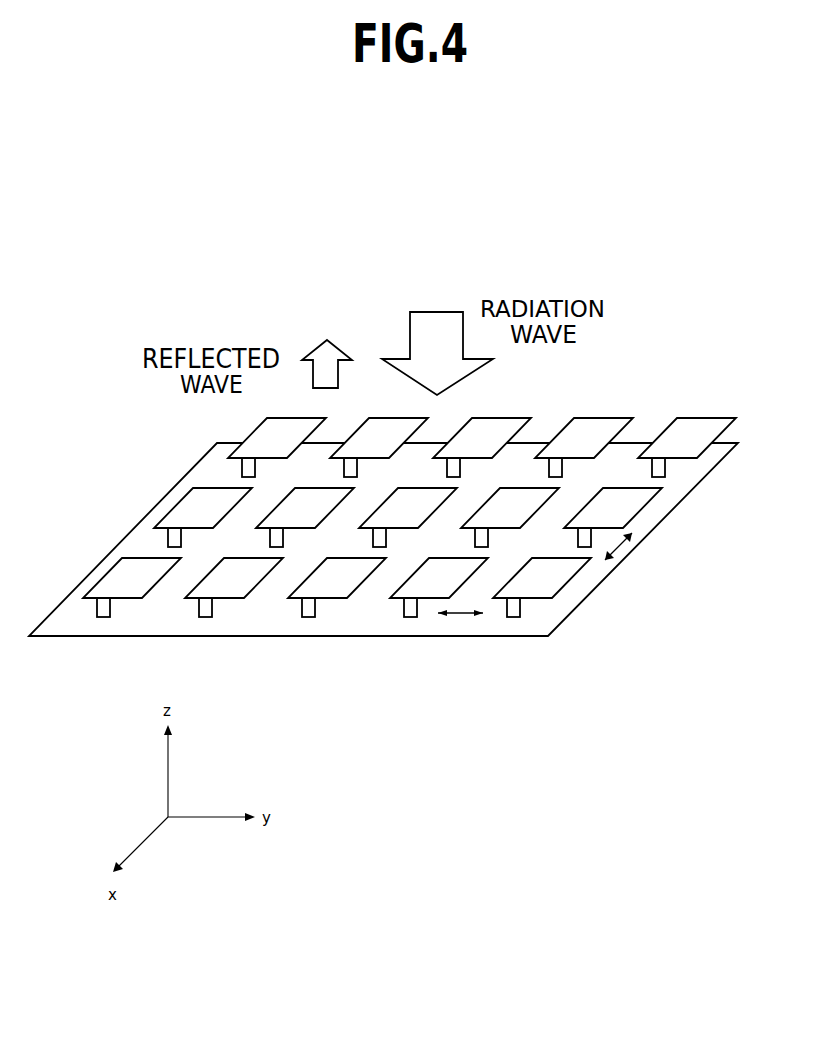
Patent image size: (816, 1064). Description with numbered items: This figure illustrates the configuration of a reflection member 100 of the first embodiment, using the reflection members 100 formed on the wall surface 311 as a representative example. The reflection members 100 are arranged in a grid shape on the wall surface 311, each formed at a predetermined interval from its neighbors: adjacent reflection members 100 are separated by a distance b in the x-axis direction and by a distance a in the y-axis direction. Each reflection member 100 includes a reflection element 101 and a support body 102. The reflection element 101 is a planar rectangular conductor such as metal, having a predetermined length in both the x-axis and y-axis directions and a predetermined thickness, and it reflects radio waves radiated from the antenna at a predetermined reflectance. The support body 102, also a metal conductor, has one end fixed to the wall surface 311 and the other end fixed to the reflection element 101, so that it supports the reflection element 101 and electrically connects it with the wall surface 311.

The reflection member 100 is at (573, 623).
The reflection element 101 is at (559, 590).
The support body 102 is at (513, 617).
The wall surface 311 is at (322, 637).
The distance a is at (462, 613).
The distance b is at (620, 548).